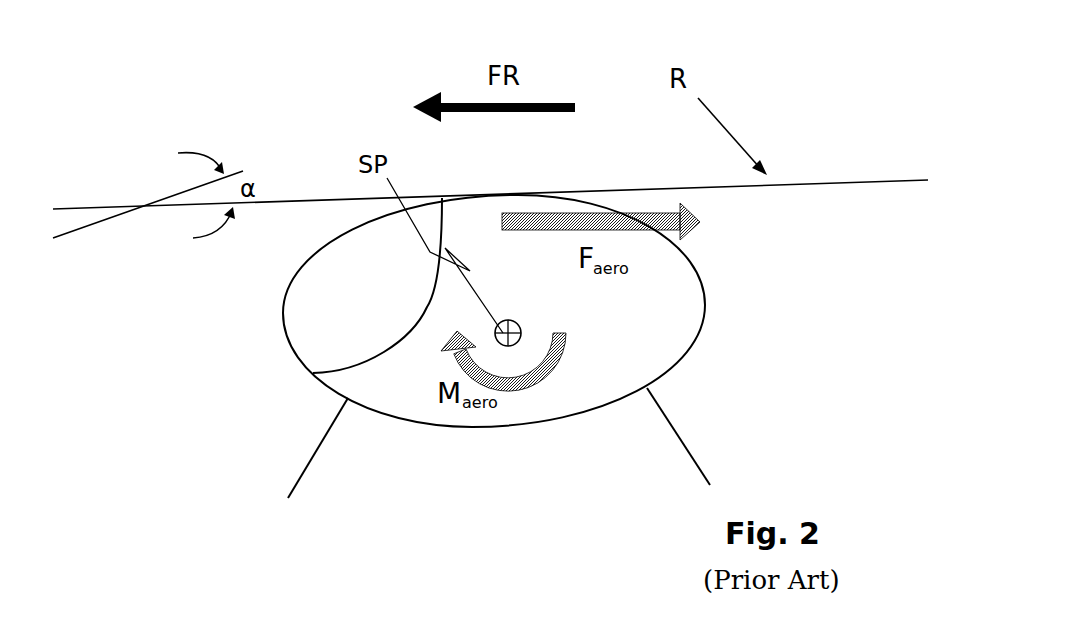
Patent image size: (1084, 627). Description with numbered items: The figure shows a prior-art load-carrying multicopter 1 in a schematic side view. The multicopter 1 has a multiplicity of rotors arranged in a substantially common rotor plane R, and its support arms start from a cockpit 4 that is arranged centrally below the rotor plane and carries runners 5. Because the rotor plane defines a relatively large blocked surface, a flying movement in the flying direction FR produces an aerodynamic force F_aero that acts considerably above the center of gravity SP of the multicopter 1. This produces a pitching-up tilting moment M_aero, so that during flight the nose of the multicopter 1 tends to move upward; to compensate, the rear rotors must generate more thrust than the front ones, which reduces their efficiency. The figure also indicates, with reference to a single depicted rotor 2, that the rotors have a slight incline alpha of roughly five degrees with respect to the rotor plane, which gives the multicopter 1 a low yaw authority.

The multicopter 1 is at (488, 370).
The rotor 2 is at (148, 245).
The cockpit 4 is at (548, 311).
The runners 5 is at (499, 448).